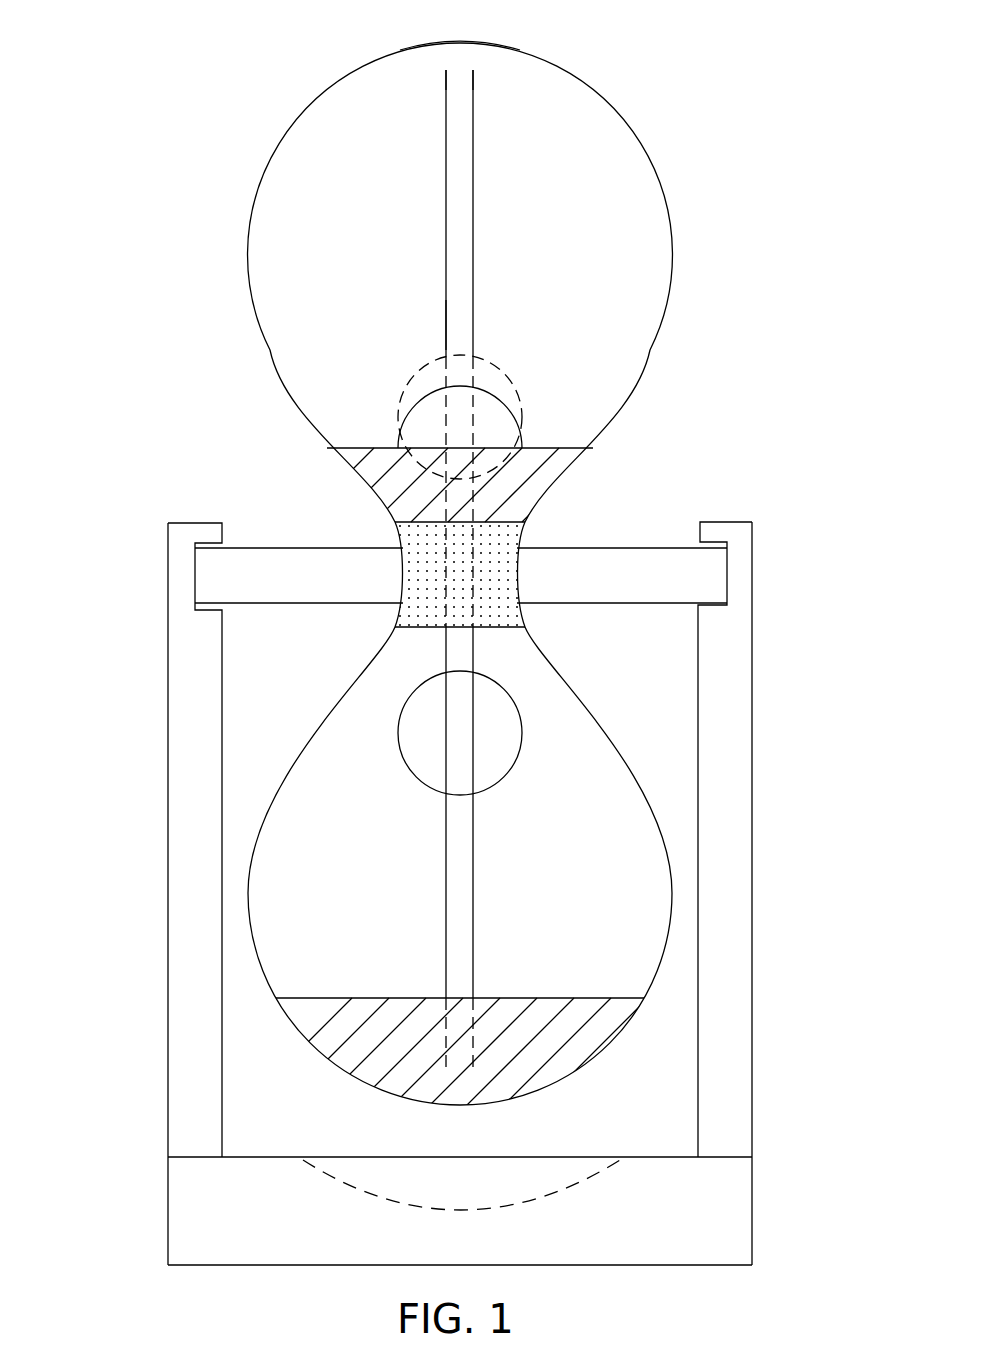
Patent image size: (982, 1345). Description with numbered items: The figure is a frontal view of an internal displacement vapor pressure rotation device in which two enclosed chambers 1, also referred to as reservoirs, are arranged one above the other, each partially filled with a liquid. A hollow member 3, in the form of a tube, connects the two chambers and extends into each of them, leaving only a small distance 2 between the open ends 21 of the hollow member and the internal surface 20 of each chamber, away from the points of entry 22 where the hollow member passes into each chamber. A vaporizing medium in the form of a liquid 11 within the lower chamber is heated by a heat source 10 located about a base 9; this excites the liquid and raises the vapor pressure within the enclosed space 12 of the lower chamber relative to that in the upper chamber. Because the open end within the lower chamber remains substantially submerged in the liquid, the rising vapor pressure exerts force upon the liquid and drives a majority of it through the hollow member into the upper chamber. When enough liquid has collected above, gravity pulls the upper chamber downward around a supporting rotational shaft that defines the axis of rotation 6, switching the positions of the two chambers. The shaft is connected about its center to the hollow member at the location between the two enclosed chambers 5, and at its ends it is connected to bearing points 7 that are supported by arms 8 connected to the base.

The enclosed chamber 1 is at (248, 231).
The small distance 2 is at (467, 58).
The hollow member 3 is at (446, 325).
The connection point between the two enclosed chambers 5 is at (405, 570).
The axis of rotation 6 is at (322, 578).
The bearing point 7 is at (197, 566).
The arm 8 is at (168, 794).
The base 9 is at (188, 1179).
The heat source 10 is at (393, 1178).
The liquid 11 is at (388, 477).
The enclosed space 12 is at (577, 370).
The internal surface 20 is at (463, 43).
The open end 21 is at (460, 70).
The point of entry 22 is at (483, 517).